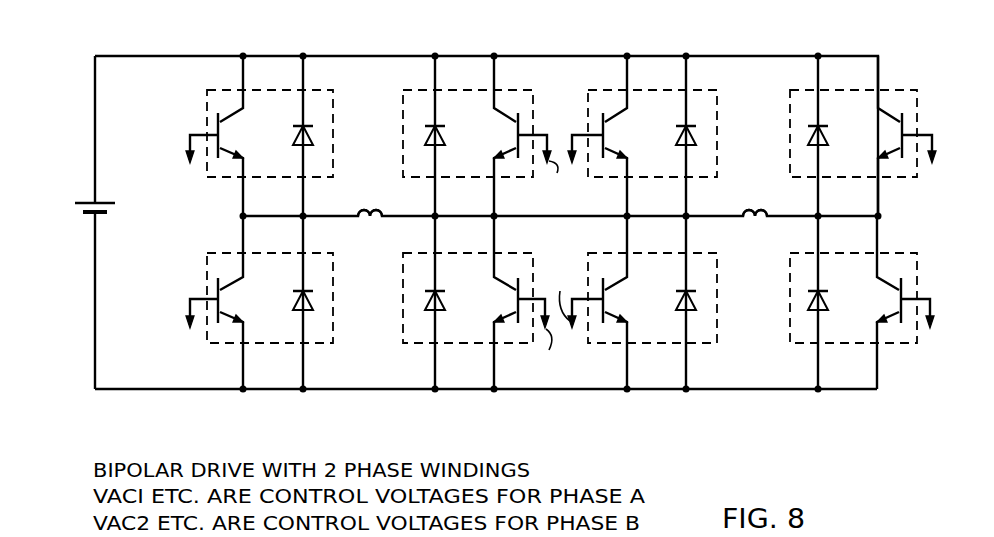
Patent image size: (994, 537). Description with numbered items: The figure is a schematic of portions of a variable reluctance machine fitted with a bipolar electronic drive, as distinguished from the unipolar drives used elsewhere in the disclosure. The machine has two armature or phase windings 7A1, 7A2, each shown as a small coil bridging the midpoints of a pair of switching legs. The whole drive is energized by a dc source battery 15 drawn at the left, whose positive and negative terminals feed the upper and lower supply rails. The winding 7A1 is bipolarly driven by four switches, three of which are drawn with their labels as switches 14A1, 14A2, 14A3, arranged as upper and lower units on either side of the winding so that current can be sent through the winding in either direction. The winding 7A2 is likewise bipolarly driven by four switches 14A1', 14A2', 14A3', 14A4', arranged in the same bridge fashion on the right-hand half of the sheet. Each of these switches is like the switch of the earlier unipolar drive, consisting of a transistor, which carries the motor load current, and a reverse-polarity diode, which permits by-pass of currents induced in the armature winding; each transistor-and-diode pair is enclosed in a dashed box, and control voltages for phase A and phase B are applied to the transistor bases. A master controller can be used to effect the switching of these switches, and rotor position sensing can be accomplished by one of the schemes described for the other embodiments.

The dc source battery 15 is at (90, 222).
The armature or phase winding 7A1 is at (365, 214).
The armature or phase winding 7A2 is at (751, 214).
The switch 14A1 is at (257, 119).
The switch 14A2 is at (243, 322).
The switch 14A3 is at (487, 225).
The switch 14A1' is at (647, 119).
The switch 14A2' is at (634, 322).
The switch 14A3' is at (868, 119).
The switch 14A4' is at (862, 322).